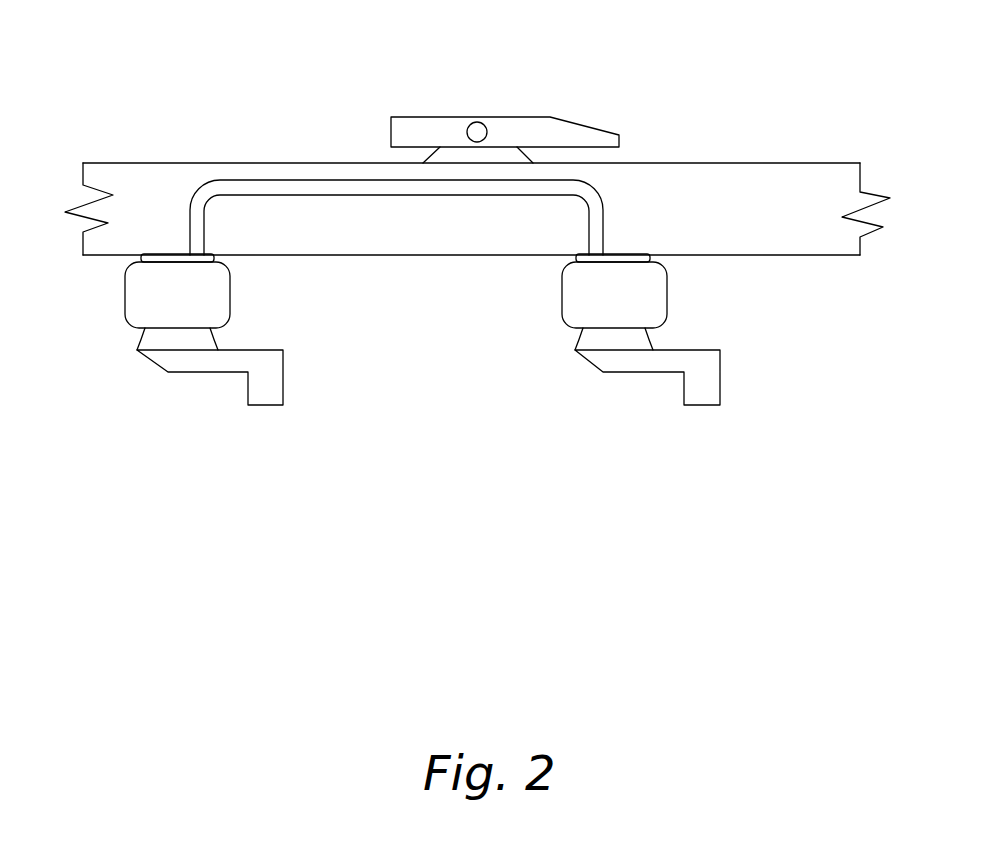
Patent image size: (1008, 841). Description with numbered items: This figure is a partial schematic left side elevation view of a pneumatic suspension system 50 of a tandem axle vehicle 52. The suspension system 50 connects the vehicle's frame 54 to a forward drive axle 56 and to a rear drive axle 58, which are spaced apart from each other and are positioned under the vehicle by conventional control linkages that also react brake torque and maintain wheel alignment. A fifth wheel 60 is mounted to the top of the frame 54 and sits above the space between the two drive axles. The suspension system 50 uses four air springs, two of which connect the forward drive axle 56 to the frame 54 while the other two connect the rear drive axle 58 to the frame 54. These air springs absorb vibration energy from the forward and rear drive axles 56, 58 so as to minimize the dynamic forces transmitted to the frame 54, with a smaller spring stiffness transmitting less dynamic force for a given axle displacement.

The pneumatic suspension system 50 is at (693, 318).
The tandem axle vehicle 52 is at (745, 103).
The frame 54 is at (785, 175).
The forward drive axle 56 is at (263, 392).
The rear drive axle 58 is at (692, 390).
The fifth wheel 60 is at (483, 117).